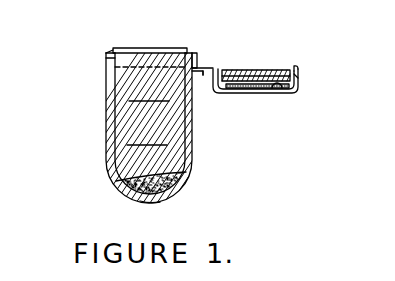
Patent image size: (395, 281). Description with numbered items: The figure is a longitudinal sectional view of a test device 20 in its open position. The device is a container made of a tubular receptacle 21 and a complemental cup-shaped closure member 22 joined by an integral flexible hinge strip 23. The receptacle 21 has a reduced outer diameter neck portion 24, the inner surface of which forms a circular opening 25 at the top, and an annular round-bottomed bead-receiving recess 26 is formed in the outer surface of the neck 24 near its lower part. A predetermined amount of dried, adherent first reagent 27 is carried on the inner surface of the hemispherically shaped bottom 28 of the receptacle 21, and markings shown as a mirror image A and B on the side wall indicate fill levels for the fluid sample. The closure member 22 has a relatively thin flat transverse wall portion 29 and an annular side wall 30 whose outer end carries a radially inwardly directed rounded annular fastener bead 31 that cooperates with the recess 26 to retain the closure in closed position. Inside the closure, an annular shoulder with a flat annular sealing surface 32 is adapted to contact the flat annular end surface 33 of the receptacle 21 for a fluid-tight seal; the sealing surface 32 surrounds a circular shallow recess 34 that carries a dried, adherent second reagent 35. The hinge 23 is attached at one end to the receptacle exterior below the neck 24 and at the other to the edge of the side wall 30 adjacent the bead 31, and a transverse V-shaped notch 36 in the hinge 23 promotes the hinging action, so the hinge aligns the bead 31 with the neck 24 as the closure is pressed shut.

The test device 20 is at (280, 100).
The tubular receptacle 21 is at (105, 117).
The cup-shaped closure member 22 is at (278, 64).
The flexible hinge strip 23 is at (200, 79).
The neck portion 24 is at (111, 49).
The circular opening 25 is at (150, 55).
The bead-receiving recess 26 is at (108, 61).
The first reagent 27 is at (192, 170).
The hemispherically shaped bottom 28 is at (156, 203).
The transverse wall portion 29 is at (256, 94).
The annular side wall 30 is at (301, 69).
The annular fastener bead 31 is at (236, 70).
The annular sealing surface 32 is at (300, 77).
The annular end surface 33 is at (192, 52).
The shallow recess 34 is at (279, 88).
The second reagent 35 is at (251, 85).
The V-shaped notch 36 is at (203, 67).